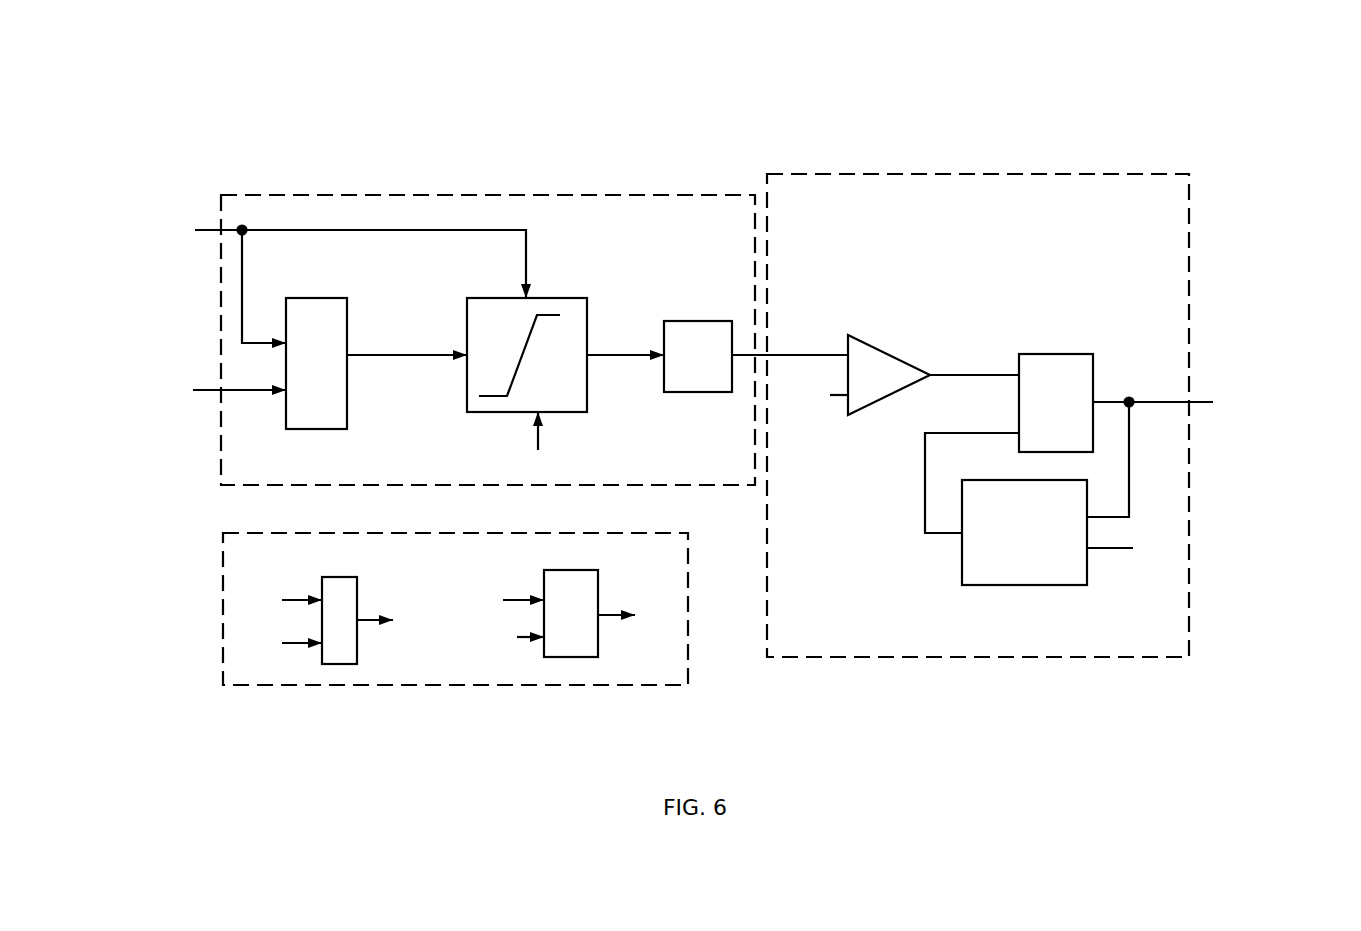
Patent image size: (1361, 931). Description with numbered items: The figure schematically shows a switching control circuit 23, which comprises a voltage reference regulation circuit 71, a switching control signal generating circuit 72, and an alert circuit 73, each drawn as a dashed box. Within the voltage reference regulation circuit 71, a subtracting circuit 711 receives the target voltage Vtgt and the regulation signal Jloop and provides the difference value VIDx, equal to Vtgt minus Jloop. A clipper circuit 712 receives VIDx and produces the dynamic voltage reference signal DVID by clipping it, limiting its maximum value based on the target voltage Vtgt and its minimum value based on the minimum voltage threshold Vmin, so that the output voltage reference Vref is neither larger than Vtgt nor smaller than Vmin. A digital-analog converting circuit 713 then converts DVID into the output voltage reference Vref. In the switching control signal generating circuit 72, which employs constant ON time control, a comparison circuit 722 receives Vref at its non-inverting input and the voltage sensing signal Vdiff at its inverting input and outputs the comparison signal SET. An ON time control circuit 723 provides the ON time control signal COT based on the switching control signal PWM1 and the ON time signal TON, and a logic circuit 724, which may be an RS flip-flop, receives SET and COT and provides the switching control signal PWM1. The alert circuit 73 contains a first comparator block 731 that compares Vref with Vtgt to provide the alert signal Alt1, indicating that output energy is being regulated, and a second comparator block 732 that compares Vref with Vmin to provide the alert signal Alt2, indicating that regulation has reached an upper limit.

The switching control circuit 23 is at (1288, 137).
The voltage reference regulation circuit 71 is at (492, 193).
The subtracting circuit 711 is at (323, 298).
The clipper circuit 712 is at (574, 277).
The digital-analog converting circuit 713 is at (673, 321).
The switching control signal generating circuit 72 is at (1135, 174).
The comparison circuit 722 is at (873, 343).
The ON time control circuit 723 is at (965, 585).
The logic circuit 724 is at (1057, 354).
The alert circuit 73 is at (652, 533).
The inequality comparator 731 is at (358, 590).
The less-than-or-equal comparator 732 is at (600, 588).